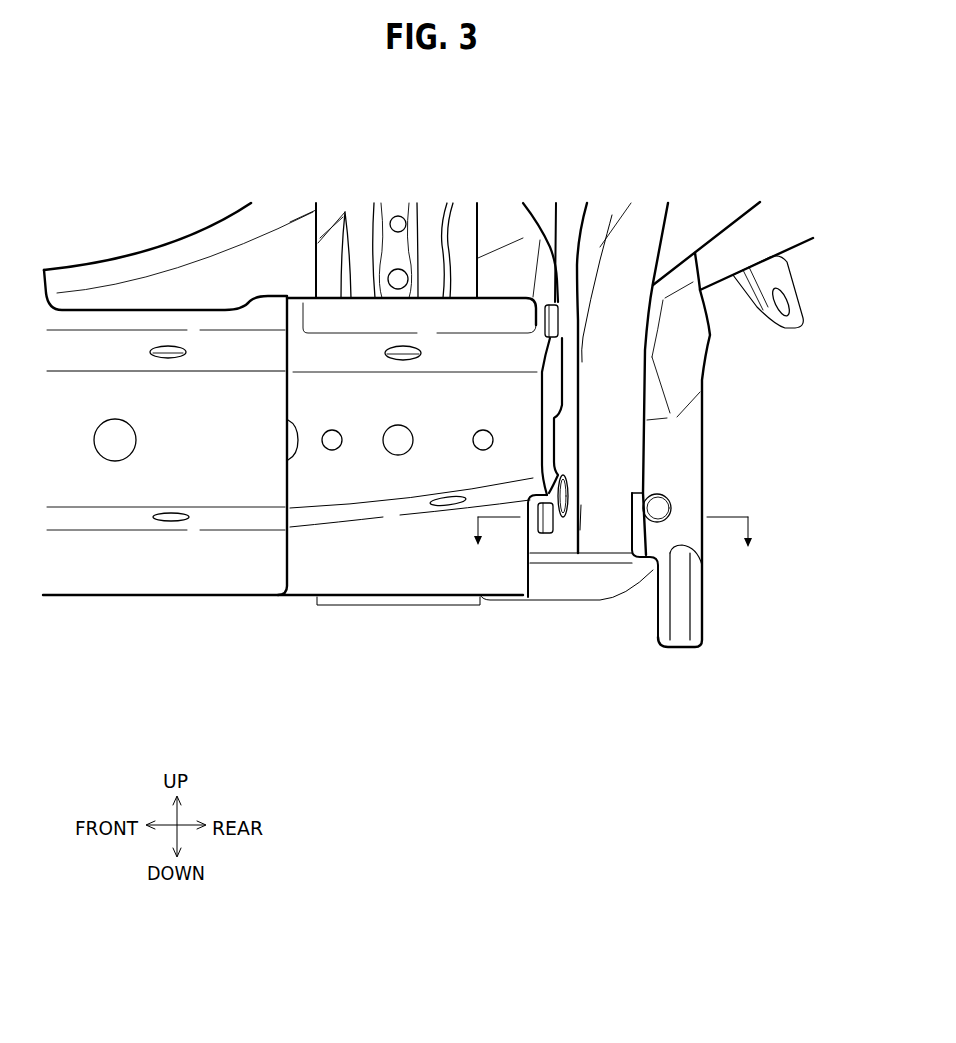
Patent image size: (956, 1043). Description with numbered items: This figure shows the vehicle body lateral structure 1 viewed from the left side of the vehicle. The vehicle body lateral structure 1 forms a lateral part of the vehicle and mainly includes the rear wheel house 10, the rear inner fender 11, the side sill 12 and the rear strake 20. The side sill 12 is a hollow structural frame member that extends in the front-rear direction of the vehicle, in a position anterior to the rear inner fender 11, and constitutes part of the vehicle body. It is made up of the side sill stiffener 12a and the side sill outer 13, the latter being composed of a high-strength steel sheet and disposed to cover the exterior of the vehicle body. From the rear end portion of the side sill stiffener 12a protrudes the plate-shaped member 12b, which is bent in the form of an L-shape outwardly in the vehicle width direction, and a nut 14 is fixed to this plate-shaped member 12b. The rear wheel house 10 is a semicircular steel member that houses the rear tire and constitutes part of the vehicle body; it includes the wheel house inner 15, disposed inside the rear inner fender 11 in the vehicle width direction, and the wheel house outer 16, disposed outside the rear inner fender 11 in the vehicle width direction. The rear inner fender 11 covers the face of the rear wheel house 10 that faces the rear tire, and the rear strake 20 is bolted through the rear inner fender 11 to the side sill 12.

The vehicle body lateral structure 1 is at (666, 103).
The rear wheel house 10 is at (760, 578).
The rear inner fender 11 is at (697, 230).
The side sill 12 is at (403, 657).
The side sill stiffener 12a is at (350, 575).
The plate-shaped member 12b is at (555, 290).
The side sill outer 13 is at (170, 578).
The nut 14 is at (547, 323).
The wheel house inner 15 is at (704, 366).
The wheel house outer 16 is at (612, 215).
The rear strake 20 is at (683, 613).